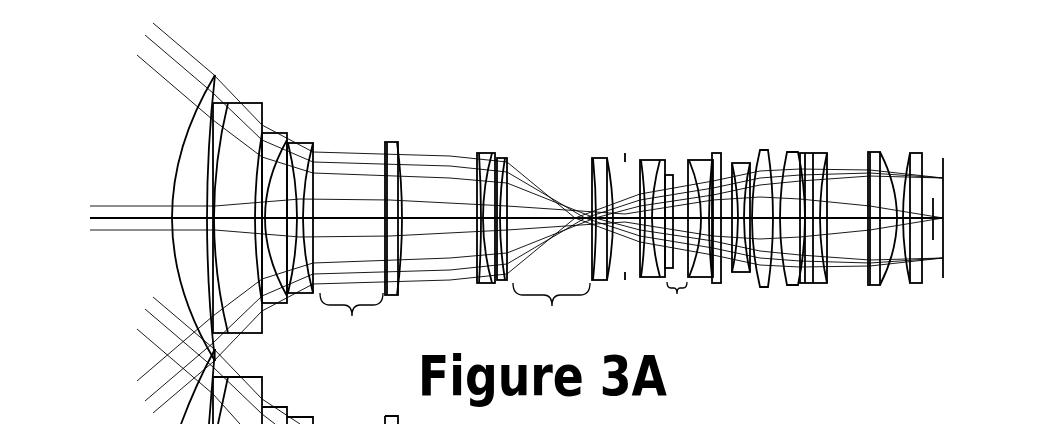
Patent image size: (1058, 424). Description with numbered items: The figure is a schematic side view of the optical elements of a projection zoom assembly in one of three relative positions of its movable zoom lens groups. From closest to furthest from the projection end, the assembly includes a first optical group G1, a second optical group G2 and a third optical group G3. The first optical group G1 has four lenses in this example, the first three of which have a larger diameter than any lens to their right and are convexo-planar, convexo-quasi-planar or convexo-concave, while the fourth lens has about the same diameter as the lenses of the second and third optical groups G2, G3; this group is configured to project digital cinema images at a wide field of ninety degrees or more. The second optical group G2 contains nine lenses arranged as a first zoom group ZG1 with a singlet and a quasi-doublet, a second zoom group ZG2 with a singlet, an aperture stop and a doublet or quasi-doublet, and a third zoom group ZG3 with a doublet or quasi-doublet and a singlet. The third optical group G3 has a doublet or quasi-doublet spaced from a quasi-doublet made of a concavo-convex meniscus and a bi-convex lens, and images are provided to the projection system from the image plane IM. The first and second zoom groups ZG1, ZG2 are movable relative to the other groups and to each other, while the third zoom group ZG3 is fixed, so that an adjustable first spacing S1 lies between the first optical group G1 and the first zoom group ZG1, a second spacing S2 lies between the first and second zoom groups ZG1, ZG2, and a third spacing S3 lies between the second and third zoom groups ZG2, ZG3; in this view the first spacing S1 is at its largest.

The first optical group G1 is at (247, 53).
The second optical group G2 is at (587, 183).
The third optical group G3 is at (908, 53).
The first zoom group ZG1 is at (502, 140).
The second zoom group ZG2 is at (673, 157).
The third zoom group ZG3 is at (746, 192).
The first spacing S1 is at (351, 318).
The second spacing S2 is at (551, 310).
The third spacing S3 is at (677, 299).
The image plane IM is at (943, 255).